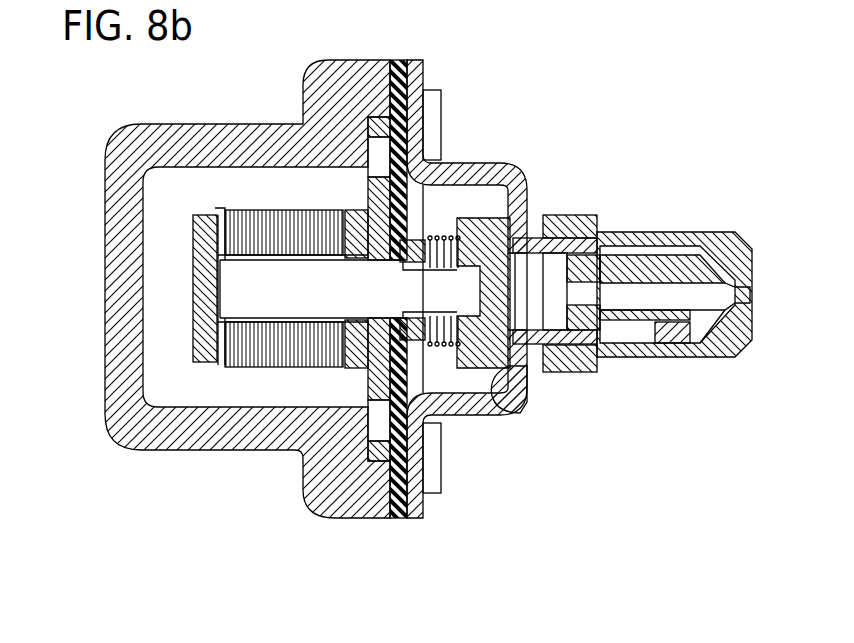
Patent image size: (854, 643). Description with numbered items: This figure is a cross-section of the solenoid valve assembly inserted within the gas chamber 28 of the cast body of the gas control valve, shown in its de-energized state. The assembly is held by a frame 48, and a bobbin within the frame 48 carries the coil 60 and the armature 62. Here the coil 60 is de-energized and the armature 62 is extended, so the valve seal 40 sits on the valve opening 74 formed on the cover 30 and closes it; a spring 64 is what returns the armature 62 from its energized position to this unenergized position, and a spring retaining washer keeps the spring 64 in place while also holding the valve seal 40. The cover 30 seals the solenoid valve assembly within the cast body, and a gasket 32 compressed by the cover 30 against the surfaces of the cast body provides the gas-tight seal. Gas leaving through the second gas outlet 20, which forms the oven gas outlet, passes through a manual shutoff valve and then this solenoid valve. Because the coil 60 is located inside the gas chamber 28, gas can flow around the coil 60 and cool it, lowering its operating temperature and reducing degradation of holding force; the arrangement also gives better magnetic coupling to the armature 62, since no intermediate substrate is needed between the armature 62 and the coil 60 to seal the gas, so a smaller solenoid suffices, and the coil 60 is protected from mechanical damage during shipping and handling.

The second gas outlet 20 is at (657, 220).
The gas chamber 28 is at (300, 393).
The cover 30 is at (477, 407).
The gasket 32 is at (383, 518).
The valve seal 40 is at (513, 208).
The frame 48 is at (367, 195).
The coil 60 is at (248, 362).
The armature 62 is at (247, 297).
The spring 64 is at (427, 235).
The valve opening 74 is at (510, 405).